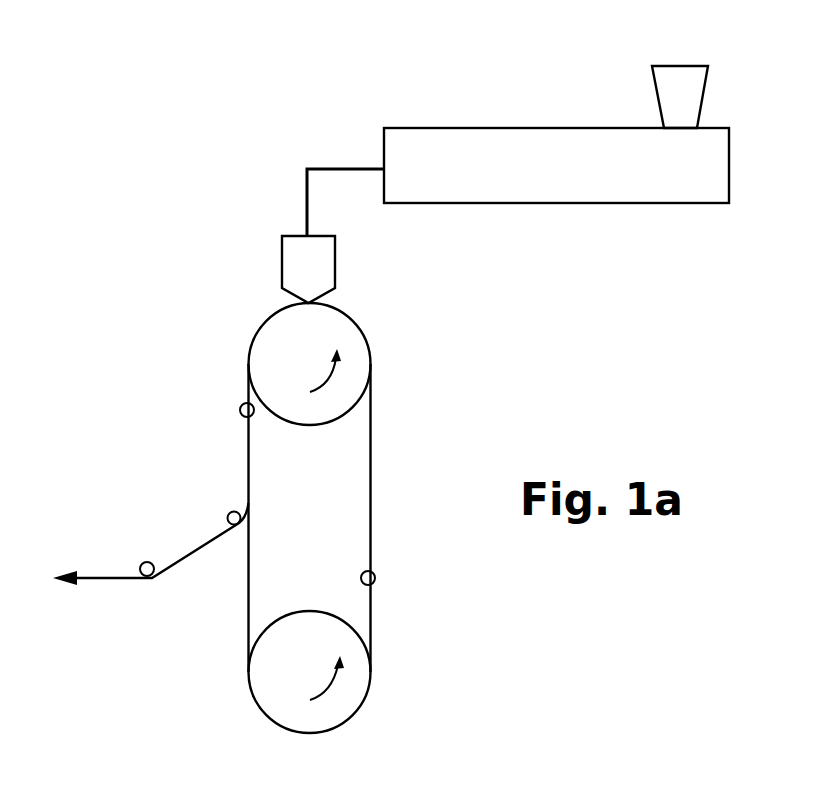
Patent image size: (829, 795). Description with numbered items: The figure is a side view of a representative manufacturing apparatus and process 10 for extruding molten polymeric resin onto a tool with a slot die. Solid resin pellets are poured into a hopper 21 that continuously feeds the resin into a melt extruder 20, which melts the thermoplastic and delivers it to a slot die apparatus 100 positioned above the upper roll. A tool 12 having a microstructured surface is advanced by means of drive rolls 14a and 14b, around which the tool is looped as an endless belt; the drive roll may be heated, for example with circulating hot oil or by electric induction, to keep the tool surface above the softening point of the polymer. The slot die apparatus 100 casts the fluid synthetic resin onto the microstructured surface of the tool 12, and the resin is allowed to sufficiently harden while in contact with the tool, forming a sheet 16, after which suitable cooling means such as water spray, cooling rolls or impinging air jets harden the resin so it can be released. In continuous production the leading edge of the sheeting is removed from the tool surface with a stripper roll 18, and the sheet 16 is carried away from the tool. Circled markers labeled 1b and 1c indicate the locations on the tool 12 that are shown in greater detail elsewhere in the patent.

The manufacturing apparatus and process 10 is at (356, 44).
The melt extruder 20 is at (517, 137).
The hopper 21 is at (699, 92).
The slot die apparatus 100 is at (327, 265).
The drive roll 14a is at (353, 345).
The drive roll 14b is at (347, 697).
The tool 12 is at (372, 483).
The sheet 16 is at (248, 450).
The stripper roll 18 is at (229, 513).
The location of view of Fig. 1b is at (376, 577).
The location of view of Fig. 1c is at (240, 410).